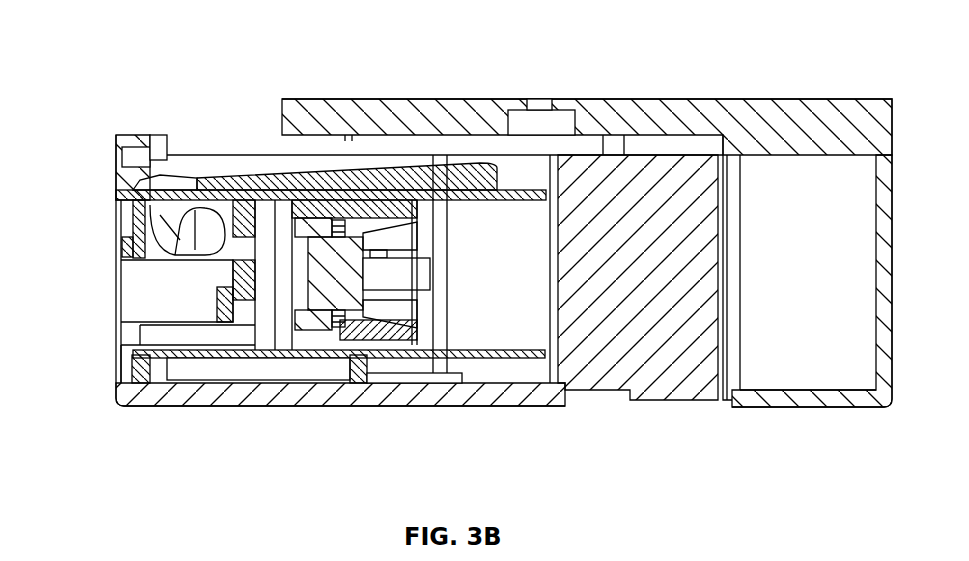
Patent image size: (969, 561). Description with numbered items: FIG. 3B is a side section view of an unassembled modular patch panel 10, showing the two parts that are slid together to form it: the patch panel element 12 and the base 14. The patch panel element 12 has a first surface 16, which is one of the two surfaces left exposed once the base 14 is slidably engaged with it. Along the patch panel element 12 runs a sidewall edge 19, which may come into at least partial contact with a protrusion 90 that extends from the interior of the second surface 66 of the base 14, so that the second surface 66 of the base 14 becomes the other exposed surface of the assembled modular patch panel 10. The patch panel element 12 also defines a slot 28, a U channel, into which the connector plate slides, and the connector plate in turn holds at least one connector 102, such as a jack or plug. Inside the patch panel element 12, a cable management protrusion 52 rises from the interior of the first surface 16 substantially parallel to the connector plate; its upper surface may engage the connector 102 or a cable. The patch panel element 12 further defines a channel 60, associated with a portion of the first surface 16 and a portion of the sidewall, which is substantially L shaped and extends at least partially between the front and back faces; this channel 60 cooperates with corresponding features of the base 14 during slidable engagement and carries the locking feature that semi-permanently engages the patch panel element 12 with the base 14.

The modular patch panel 10 is at (103, 42).
The patch panel element 12 is at (121, 130).
The base 14 is at (818, 99).
The first surface 16 is at (213, 408).
The sidewall edge 19 is at (210, 155).
The slot 28 is at (143, 389).
The protrusion 52 is at (360, 384).
The channel 60 is at (594, 398).
The second surface 66 is at (705, 99).
The protrusion 90 is at (347, 139).
The connector 102 is at (118, 250).